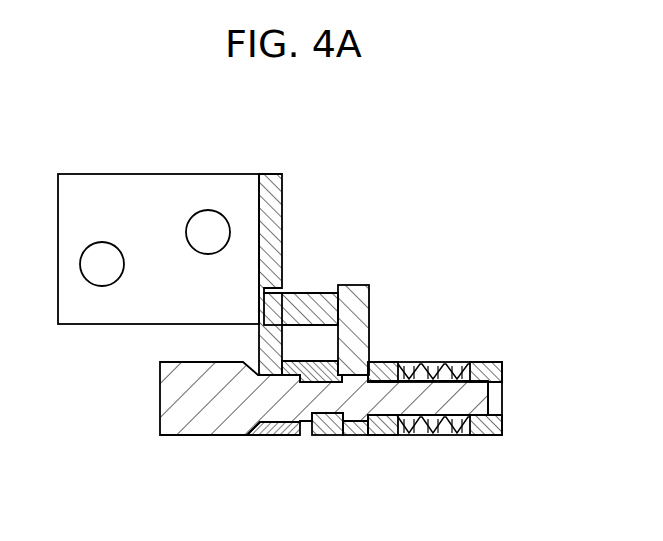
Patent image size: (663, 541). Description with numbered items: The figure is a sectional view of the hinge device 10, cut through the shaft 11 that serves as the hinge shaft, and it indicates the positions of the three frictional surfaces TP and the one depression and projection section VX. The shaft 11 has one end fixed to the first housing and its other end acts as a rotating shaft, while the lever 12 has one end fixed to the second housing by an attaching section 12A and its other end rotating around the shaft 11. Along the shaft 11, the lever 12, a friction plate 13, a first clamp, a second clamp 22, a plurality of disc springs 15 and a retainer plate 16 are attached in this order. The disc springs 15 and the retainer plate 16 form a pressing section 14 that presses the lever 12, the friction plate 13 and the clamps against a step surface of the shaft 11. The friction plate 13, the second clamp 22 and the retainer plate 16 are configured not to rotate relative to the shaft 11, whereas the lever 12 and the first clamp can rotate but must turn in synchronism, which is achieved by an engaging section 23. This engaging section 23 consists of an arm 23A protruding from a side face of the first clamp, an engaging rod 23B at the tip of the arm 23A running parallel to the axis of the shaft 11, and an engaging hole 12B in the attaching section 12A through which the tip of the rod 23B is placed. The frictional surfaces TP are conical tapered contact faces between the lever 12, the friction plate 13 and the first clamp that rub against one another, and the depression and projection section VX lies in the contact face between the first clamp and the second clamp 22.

The hinge device 10 is at (487, 167).
The shaft 11 is at (200, 434).
The lever 12 is at (258, 363).
The attaching section 12A is at (103, 174).
The engaging hole 12B is at (284, 297).
The friction plate 13 is at (300, 365).
The pressing section 14 is at (572, 312).
The disc springs 15 is at (438, 362).
The retainer plate 16 is at (502, 373).
The second clamp 22 is at (388, 436).
The engaging section 23 is at (327, 173).
The arm 23A is at (362, 327).
The engaging rod 23B is at (312, 297).
The frictional surfaces TP is at (252, 436).
The depression and projection section VX is at (378, 436).